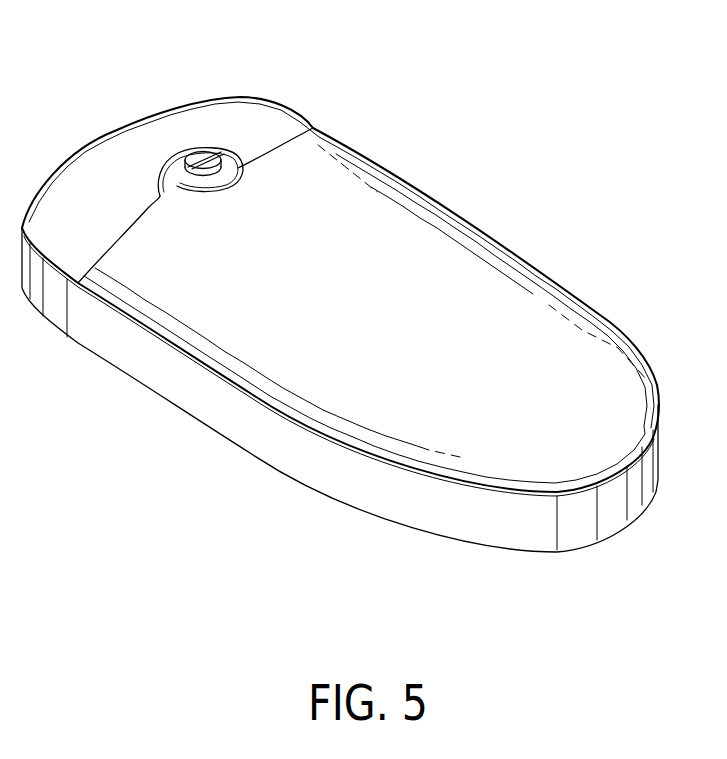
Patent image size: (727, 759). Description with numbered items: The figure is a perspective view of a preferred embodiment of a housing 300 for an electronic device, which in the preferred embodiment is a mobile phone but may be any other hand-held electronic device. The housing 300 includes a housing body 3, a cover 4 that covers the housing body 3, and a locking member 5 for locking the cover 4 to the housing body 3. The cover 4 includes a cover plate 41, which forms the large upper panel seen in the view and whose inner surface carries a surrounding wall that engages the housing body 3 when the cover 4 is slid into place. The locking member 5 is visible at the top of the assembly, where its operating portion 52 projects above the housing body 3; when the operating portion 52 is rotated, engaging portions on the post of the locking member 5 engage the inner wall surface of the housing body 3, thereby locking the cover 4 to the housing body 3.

The housing 300 is at (340, 292).
The housing body 3 is at (202, 423).
The cover 4 is at (362, 305).
The cover plate 41 is at (500, 285).
The locking member 5 is at (182, 115).
The operating portion 52 is at (191, 163).